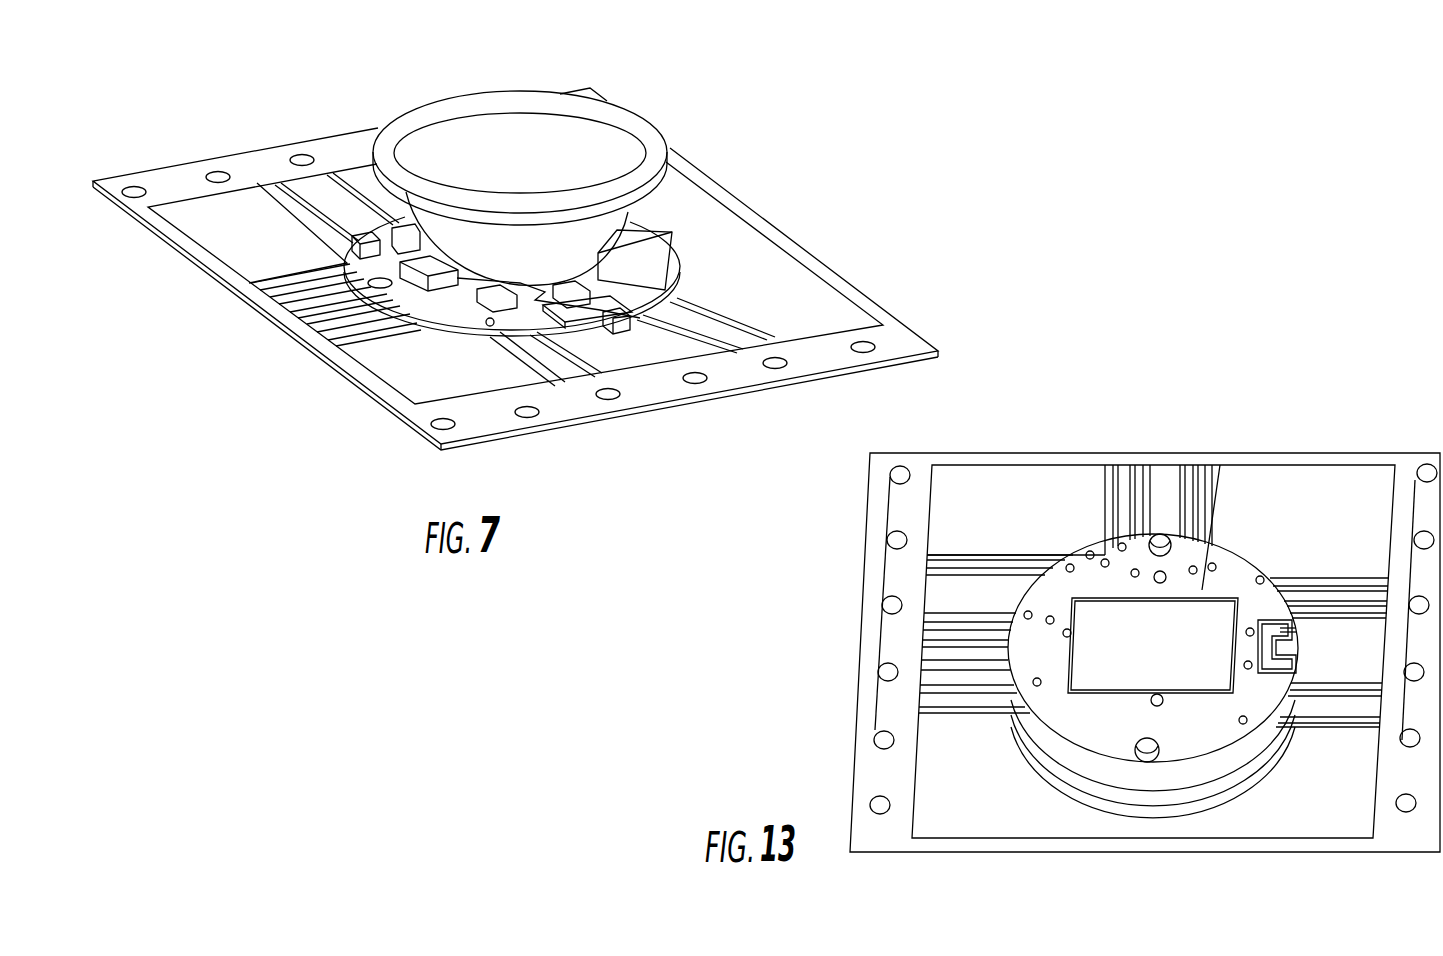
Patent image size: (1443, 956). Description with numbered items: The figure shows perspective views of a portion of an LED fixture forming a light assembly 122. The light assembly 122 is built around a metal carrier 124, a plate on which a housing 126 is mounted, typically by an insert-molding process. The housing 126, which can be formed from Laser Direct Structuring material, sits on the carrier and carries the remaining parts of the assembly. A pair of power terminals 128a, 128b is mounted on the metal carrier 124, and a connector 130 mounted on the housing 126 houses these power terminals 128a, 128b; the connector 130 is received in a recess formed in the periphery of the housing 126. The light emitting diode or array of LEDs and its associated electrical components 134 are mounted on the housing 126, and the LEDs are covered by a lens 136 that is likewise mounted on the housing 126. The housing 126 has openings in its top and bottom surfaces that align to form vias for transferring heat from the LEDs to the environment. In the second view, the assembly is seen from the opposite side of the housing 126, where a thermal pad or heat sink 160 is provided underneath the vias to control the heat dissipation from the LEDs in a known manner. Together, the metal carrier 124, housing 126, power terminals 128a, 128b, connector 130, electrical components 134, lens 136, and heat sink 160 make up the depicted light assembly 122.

In FIG. 7, the light assembly 122 is at (668, 104).
In FIG. 13, the light assembly 122 is at (1258, 427).
In FIG. 7, the metal carrier 124 is at (815, 261).
In FIG. 13, the metal carrier 124 is at (1015, 452).
In FIG. 7, the housing 126 is at (433, 322).
In FIG. 13, the housing 126 is at (1083, 725).
In FIG. 7, the power terminal 128a is at (583, 328).
In FIG. 7, the power terminal 128b is at (600, 327).
In FIG. 7, the connector 130 is at (713, 358).
In FIG. 7, the electrical components 134 is at (352, 247).
In FIG. 7, the lens 136 is at (500, 118).
In FIG. 13, the thermal pad or heat sink 160 is at (1197, 665).